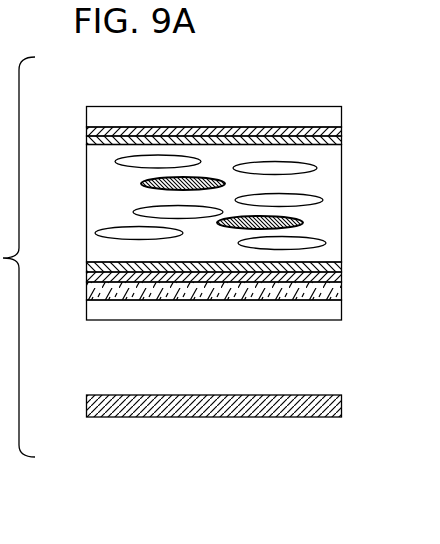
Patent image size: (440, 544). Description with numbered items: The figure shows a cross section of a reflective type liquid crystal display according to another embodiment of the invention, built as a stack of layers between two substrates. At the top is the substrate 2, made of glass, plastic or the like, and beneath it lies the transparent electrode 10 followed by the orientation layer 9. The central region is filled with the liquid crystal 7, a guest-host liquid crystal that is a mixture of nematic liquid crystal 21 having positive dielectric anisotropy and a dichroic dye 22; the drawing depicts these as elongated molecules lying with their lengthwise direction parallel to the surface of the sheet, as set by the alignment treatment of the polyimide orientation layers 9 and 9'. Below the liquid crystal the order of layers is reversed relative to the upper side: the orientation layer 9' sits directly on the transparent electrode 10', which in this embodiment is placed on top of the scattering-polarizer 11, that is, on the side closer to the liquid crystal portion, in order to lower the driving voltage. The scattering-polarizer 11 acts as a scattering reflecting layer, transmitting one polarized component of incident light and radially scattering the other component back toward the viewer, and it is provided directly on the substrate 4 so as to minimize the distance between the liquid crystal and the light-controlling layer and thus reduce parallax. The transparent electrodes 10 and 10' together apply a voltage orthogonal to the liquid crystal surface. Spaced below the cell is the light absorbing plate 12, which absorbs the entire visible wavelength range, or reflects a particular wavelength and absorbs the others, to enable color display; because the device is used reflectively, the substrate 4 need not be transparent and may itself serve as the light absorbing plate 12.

The substrate 2 is at (343, 115).
The transparent electrode 10 is at (247, 127).
The orientation layer 9 is at (231, 139).
The liquid crystal 7 is at (335, 207).
The nematic liquid crystal 21 is at (95, 232).
The dichroic dye 22 is at (140, 184).
The orientation layer 9' is at (234, 263).
The transparent electrode 10' is at (252, 280).
The scattering-polarizer 11 is at (340, 292).
The substrate 4 is at (340, 313).
The light absorbing plate 12 is at (343, 408).